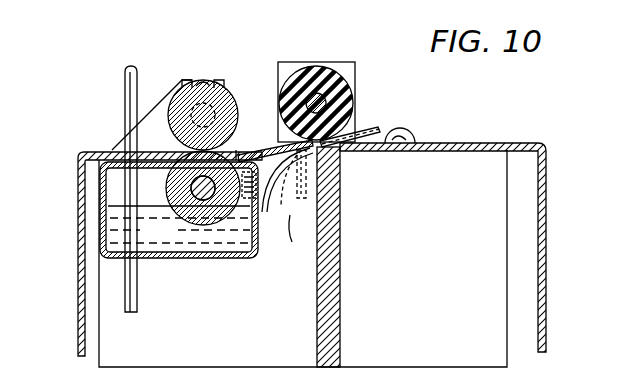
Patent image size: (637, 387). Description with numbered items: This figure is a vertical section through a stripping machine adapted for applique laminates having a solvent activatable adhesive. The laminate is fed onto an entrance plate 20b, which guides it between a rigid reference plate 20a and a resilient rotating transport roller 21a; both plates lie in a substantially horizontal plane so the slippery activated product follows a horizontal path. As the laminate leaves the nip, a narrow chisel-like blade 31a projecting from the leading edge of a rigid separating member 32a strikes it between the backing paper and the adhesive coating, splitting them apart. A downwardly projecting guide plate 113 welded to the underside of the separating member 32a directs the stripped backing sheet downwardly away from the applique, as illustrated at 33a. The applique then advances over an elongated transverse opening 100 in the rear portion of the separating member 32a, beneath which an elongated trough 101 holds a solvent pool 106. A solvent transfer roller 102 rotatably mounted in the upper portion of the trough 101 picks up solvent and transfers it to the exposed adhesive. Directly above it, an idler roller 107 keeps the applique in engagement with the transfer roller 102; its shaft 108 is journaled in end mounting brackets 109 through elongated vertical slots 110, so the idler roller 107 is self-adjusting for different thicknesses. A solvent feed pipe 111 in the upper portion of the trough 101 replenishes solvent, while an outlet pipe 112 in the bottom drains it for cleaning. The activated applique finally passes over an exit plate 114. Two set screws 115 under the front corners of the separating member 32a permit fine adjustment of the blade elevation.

The exit plate 114 is at (78, 196).
The entrance plate 20b is at (445, 145).
The reference plate 20a is at (341, 162).
The transport roller 21a is at (343, 93).
The separating member 32a is at (265, 157).
The backing sheet path 33a is at (294, 244).
The blade 31a is at (283, 196).
The guide plate 113 is at (280, 238).
The solvent feed pipe 111 is at (125, 78).
The outlet pipe 112 is at (136, 296).
The end mounting brackets 109 is at (152, 104).
The idler roller 107 is at (203, 80).
The shaft 108 is at (212, 102).
The elongated vertical slots 110 is at (196, 83).
The transverse opening 100 is at (238, 150).
The set screws 115 is at (250, 170).
The trough 101 is at (219, 258).
The solvent pool 106 is at (179, 227).
The solvent transfer roller 102 is at (200, 246).